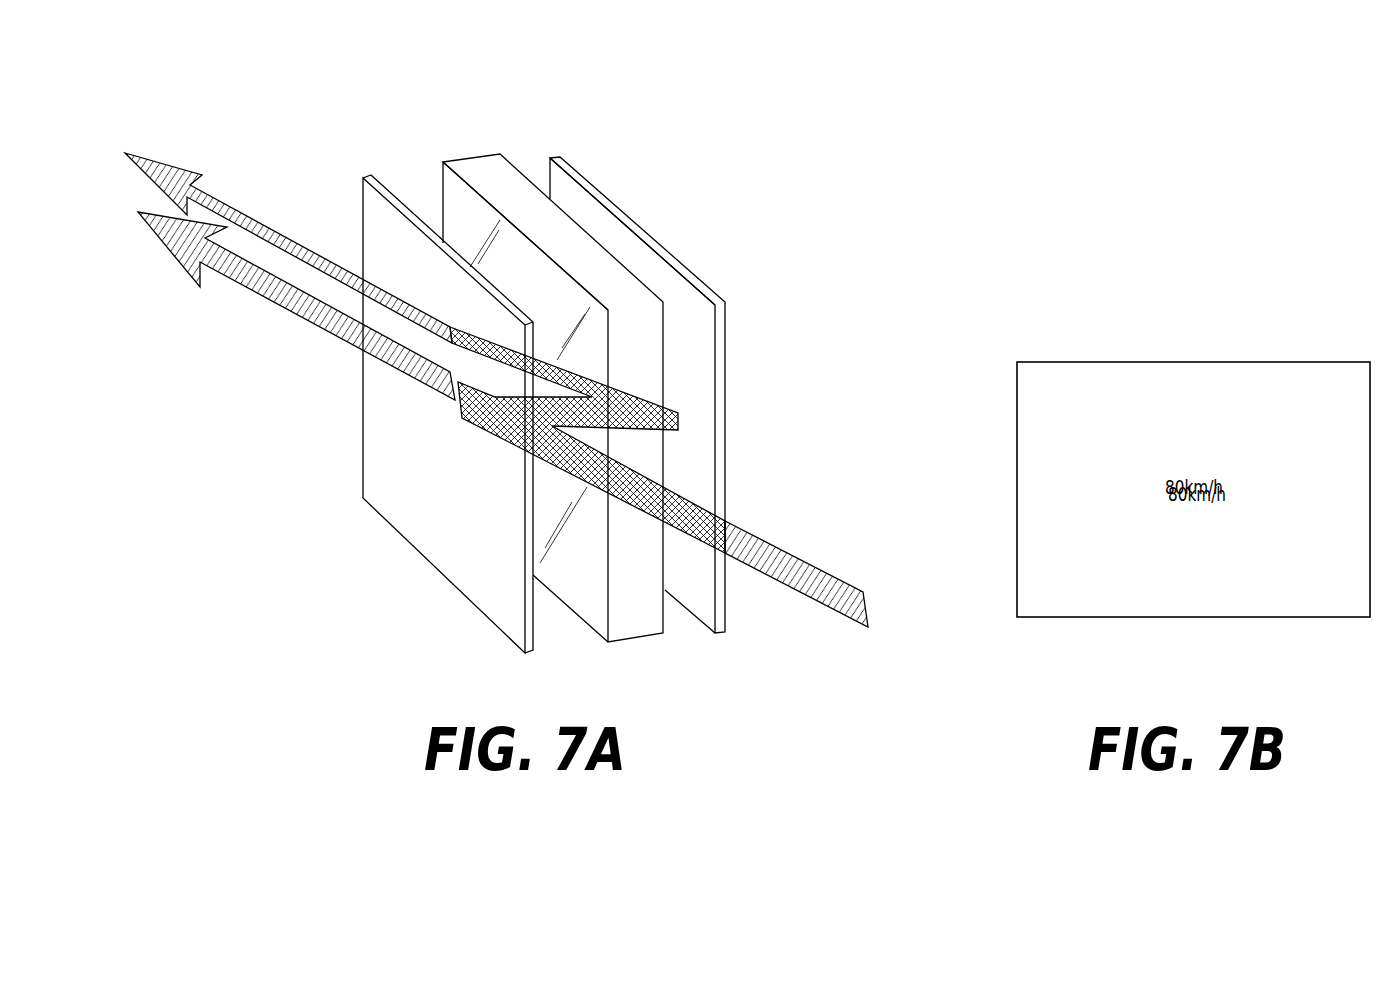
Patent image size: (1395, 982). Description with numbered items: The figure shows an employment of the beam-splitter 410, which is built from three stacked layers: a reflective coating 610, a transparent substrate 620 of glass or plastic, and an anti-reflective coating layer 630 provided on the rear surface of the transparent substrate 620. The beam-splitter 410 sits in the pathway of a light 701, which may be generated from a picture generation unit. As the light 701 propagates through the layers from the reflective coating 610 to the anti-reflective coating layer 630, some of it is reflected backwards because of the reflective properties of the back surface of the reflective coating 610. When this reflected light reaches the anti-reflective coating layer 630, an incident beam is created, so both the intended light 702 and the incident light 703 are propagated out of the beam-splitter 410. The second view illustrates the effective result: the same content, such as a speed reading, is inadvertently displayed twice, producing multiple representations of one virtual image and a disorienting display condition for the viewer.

The beam-splitter 410 is at (382, 125).
The reflective coating 610 is at (370, 224).
The transparent substrate 620 is at (477, 177).
The anti-reflective coating layer 630 is at (727, 384).
The light 701 is at (818, 569).
The light 702 is at (247, 290).
The incident light 703 is at (237, 208).